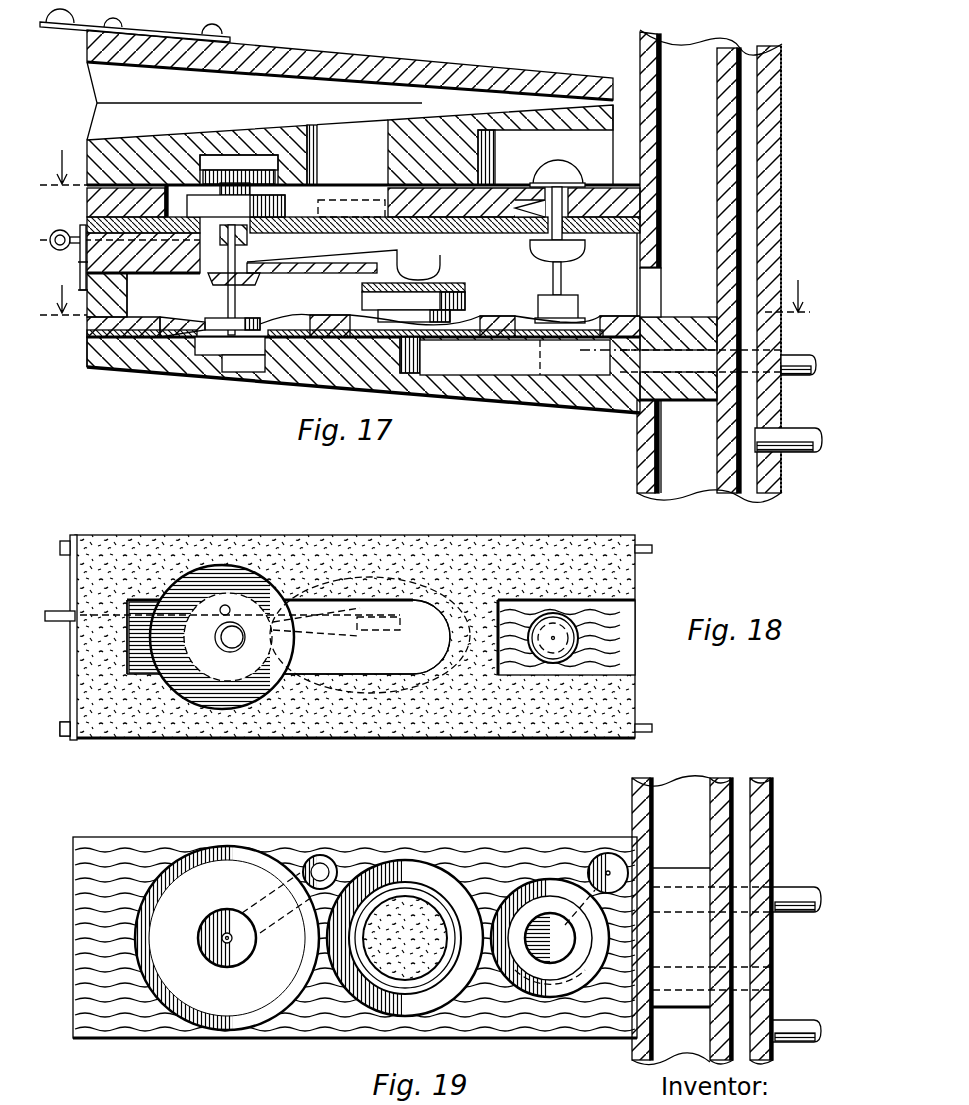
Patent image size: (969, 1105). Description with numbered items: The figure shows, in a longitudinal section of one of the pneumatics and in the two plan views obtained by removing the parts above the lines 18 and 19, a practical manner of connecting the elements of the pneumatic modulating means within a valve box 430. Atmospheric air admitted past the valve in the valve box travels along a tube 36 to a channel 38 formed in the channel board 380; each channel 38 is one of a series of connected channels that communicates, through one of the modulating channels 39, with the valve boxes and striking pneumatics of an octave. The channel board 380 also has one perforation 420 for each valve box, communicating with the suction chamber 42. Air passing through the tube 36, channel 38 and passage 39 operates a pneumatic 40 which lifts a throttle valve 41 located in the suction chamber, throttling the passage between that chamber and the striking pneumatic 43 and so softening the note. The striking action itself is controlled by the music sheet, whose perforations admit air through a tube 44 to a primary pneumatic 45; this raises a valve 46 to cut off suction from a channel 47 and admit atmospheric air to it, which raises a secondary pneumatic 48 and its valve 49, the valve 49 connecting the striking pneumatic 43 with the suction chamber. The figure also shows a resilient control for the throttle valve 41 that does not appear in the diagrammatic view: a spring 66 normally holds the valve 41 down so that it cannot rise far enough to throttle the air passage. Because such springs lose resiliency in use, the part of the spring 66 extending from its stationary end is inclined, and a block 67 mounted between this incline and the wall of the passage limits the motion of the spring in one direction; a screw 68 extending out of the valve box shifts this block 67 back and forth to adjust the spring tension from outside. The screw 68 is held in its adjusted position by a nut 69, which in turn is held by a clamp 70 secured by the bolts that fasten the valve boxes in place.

In FIG. 17, the section line 18— 18 is at (63, 181).
In FIG. 17, the section line 19— 19 is at (437, 310).
In FIG. 17, the tube 36 is at (797, 452).
In FIG. 19, the tube 36 is at (795, 1020).
In FIG. 17, the channel 38 is at (745, 193).
In FIG. 19, the channel 38 is at (735, 795).
In FIG. 17, the modulating channel 39 is at (613, 407).
In FIG. 19, the modulating channel 39 is at (487, 900).
In FIG. 17, the pneumatic 40 is at (460, 323).
In FIG. 19, the pneumatic 40 is at (363, 977).
In FIG. 17, the throttle valve 41 is at (466, 298).
In FIG. 18, the throttle valve 41 is at (360, 697).
In FIG. 19, the throttle valve 41 is at (388, 907).
In FIG. 17, the suction chamber 42 is at (680, 133).
In FIG. 19, the suction chamber 42 is at (673, 790).
In FIG. 17, the striking pneumatic 43 is at (280, 95).
In FIG. 17, the tube 44 is at (792, 374).
In FIG. 19, the tube 44 is at (792, 912).
In FIG. 17, the primary pneumatic 45 is at (583, 347).
In FIG. 19, the primary pneumatic 45 is at (580, 950).
In FIG. 17, the valve 46 is at (572, 250).
In FIG. 18, the valve 46 is at (550, 650).
In FIG. 17, the channel 47 is at (263, 387).
In FIG. 18, the channel 47 is at (480, 577).
In FIG. 19, the channel 47 is at (320, 862).
In FIG. 17, the secondary pneumatic 48 is at (187, 317).
In FIG. 19, the secondary pneumatic 48 is at (215, 875).
In FIG. 17, the valve 49 is at (262, 200).
In FIG. 18, the valve 49 is at (230, 680).
In FIG. 17, the spring 66 is at (346, 254).
In FIG. 18, the spring 66 is at (420, 603).
In FIG. 17, the lever 67 is at (367, 235).
In FIG. 18, the lever 67 is at (360, 600).
In FIG. 17, the screw 68 is at (80, 270).
In FIG. 18, the screw 68 is at (70, 614).
In FIG. 17, the nut 69 is at (163, 295).
In FIG. 18, the nut 69 is at (87, 605).
In FIG. 17, the clamp 70 is at (80, 232).
In FIG. 18, the clamp 70 is at (75, 680).
In FIG. 17, the channel board 380 is at (725, 493).
In FIG. 19, the channel board 380 is at (775, 815).
In FIG. 17, the perforation 420 is at (648, 297).
In FIG. 17, the valve box 430 is at (93, 368).